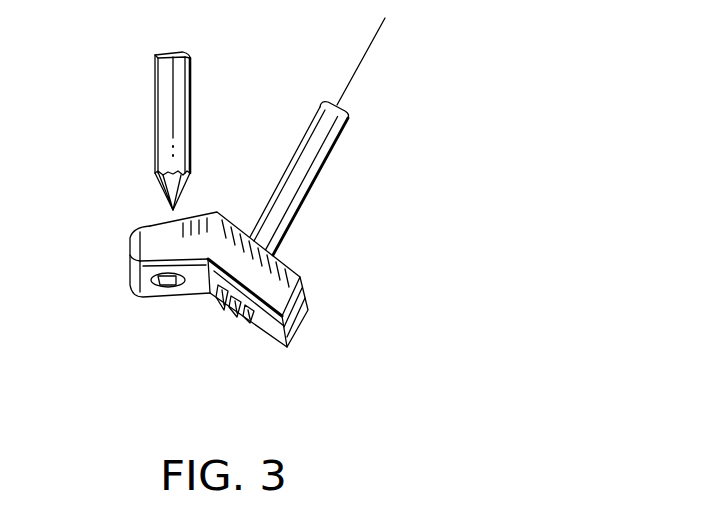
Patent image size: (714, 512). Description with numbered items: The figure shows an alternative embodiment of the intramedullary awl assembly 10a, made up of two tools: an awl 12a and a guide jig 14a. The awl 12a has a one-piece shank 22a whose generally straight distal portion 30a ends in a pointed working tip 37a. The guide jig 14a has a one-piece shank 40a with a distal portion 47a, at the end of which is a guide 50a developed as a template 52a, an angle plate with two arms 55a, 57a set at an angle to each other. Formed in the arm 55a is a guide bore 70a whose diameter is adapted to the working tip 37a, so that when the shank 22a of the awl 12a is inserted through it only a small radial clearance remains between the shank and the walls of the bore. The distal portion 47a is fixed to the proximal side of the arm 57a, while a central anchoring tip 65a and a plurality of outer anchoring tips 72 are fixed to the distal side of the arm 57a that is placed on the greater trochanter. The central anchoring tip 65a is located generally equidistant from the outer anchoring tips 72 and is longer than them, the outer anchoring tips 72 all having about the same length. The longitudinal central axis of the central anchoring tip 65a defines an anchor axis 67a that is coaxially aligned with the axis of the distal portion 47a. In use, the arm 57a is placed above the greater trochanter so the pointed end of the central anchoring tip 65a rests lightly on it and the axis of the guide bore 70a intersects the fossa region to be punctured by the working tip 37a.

The intramedullary awl assembly 10a is at (250, 85).
The awl 12a is at (146, 67).
The shank 22a is at (147, 89).
The distal portion 30a is at (162, 125).
The working tip 37a is at (172, 210).
The guide jig 14a is at (346, 151).
The distal portion 47a is at (318, 177).
The shank 40a is at (306, 220).
The anchor axis 67a is at (357, 78).
The template 52a is at (224, 202).
The arm 55a is at (130, 243).
The guide bore 70a is at (170, 296).
The guide 50a is at (311, 279).
The arm 57a is at (297, 328).
The outer anchoring tips 72 is at (207, 298).
The central anchoring tip 65a is at (235, 318).